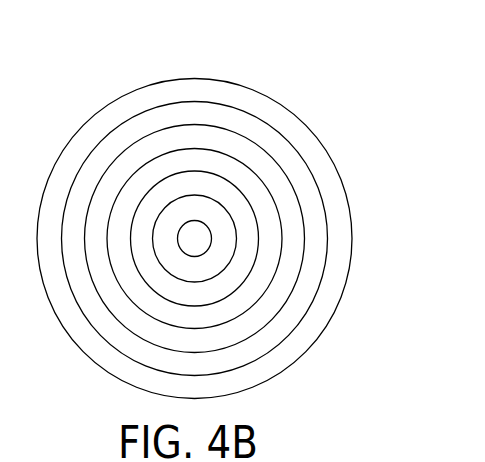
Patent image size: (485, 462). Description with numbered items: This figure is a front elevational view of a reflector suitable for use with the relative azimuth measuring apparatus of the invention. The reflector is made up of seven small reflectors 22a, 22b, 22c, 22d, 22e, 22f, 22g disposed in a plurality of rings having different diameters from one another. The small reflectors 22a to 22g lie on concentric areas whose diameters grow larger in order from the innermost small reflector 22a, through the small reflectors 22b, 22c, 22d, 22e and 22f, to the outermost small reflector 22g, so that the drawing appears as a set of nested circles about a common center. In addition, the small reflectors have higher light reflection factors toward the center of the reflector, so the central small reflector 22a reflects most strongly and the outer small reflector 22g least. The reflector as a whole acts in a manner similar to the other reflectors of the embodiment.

The small reflector 22a is at (201, 242).
The small reflector 22b is at (233, 231).
The small reflector 22c is at (247, 215).
The small reflector 22d is at (260, 203).
The small reflector 22e is at (263, 170).
The small reflector 22f is at (242, 122).
The small reflector 22g is at (205, 80).